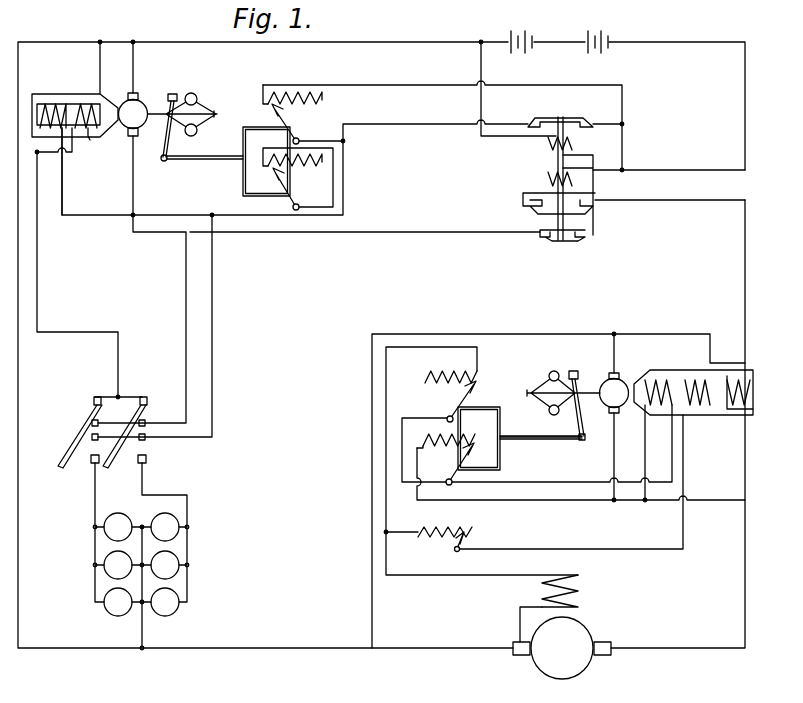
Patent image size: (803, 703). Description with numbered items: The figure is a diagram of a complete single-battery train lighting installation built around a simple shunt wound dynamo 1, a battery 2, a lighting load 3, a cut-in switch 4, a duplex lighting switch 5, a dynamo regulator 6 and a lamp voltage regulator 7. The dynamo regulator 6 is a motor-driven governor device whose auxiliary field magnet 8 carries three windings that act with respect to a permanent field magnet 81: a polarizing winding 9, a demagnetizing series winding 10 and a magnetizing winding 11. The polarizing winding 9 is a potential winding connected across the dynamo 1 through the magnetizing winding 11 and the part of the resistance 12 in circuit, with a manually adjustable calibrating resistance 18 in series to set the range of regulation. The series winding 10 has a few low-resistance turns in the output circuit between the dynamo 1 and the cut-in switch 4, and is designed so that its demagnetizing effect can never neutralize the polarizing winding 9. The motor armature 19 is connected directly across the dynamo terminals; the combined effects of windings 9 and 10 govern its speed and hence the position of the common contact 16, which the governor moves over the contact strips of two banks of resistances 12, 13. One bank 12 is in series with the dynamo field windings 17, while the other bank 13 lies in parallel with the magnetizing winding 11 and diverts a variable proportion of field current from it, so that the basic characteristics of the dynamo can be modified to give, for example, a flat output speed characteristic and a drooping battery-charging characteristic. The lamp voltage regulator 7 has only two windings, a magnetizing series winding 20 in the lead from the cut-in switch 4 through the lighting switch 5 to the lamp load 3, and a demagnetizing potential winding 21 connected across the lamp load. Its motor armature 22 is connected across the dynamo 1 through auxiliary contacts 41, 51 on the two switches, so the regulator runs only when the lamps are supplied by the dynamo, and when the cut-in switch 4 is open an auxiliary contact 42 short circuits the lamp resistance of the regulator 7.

The shunt wound dynamo 1 is at (580, 634).
The battery 2 is at (570, 22).
The lighting load 3 is at (181, 555).
The cut-in switch 4 is at (548, 160).
The auxiliary contact 41 is at (548, 226).
The auxiliary contact 42 is at (570, 113).
The duplex lighting switch 5 is at (102, 470).
The auxiliary contact 51 is at (145, 424).
The dynamo regulator 6 is at (480, 425).
The lamp voltage regulator 7 is at (275, 138).
The auxiliary field magnet 8 is at (716, 390).
The permanent field magnet 81 is at (708, 412).
The polarizing winding 9 is at (695, 385).
The demagnetizing series winding 10 is at (740, 402).
The magnetizing winding 11 is at (650, 381).
The bank of resistances 12 is at (428, 380).
The bank of resistances 13 is at (425, 442).
The common contact 16 is at (502, 432).
The dynamo field windings 17 is at (580, 590).
The calibrating resistance 18 is at (468, 528).
The motor armature 19 is at (610, 378).
The magnetizing series winding 20 is at (50, 104).
The demagnetizing potential winding 21 is at (90, 140).
The motor armature 22 is at (142, 104).